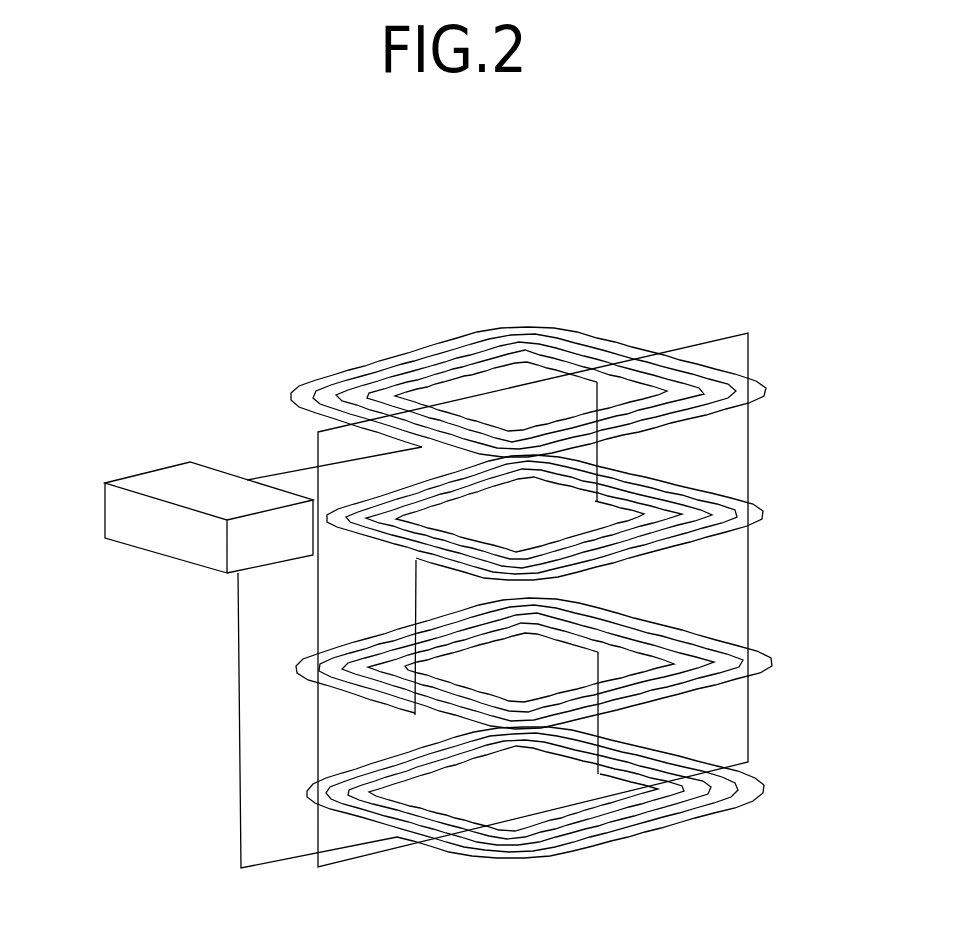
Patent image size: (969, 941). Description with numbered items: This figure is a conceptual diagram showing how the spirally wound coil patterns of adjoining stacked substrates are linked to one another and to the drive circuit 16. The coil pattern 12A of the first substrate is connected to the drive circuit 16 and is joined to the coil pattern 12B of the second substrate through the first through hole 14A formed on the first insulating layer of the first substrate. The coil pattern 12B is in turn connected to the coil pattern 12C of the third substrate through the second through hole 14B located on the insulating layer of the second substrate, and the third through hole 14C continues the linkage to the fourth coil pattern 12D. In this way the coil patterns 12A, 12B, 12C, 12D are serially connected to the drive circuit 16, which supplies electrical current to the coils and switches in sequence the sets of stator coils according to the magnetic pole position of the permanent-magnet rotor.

The coil pattern of the first substrate 12A is at (773, 385).
The coil pattern of the second substrate 12B is at (773, 512).
The coil pattern of the third substrate 12C is at (775, 655).
The fourth coil pattern 12D is at (775, 787).
The first through hole 14A is at (600, 466).
The second through hole 14B is at (413, 596).
The third through hole 14C is at (600, 722).
The drive circuit 16 is at (104, 500).